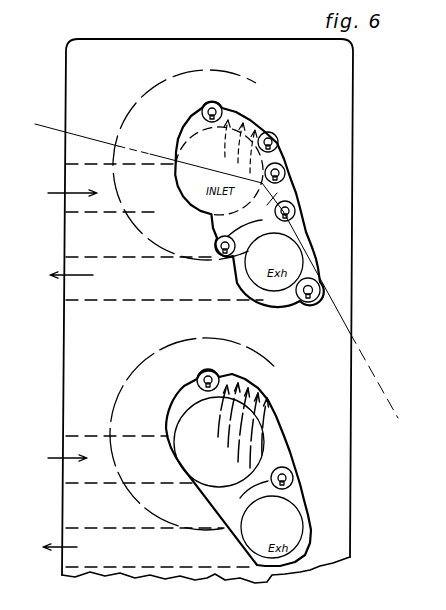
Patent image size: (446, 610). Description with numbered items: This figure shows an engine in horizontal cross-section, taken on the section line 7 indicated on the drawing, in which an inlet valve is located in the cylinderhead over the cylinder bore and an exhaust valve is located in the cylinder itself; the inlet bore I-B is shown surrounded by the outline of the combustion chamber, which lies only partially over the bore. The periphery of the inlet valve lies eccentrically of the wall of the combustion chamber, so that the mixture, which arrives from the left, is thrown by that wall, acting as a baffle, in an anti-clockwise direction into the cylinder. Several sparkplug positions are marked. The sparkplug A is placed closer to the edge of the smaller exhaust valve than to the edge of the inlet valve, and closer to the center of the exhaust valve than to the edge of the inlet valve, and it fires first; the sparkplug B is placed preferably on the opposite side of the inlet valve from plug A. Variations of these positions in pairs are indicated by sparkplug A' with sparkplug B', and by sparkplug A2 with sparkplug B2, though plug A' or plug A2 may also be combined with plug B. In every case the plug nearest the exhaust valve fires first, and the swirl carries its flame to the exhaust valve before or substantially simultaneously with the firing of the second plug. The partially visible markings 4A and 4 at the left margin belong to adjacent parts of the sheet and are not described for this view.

The section line 7 is at (388, 415).
The sparkplug B is at (236, 238).
The sparkplug B1 B' is at (283, 142).
The sparkplug B2 is at (286, 173).
The sparkplug A is at (294, 345).
The sparkplug A2 is at (222, 257).
The sparkplug A1 A' is at (319, 285).
The inlet bore I-B is at (175, 190).
The adjacent part 4A (partially visible) 4A is at (7, 231).
The adjacent part 4 (partially visible) 4 is at (14, 265).